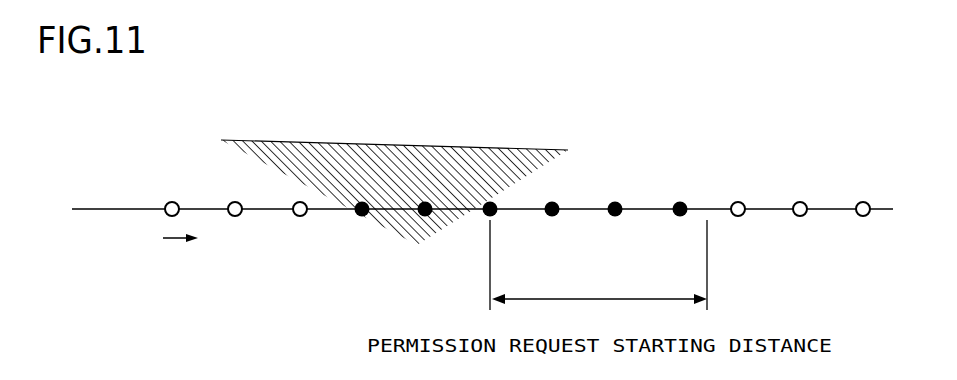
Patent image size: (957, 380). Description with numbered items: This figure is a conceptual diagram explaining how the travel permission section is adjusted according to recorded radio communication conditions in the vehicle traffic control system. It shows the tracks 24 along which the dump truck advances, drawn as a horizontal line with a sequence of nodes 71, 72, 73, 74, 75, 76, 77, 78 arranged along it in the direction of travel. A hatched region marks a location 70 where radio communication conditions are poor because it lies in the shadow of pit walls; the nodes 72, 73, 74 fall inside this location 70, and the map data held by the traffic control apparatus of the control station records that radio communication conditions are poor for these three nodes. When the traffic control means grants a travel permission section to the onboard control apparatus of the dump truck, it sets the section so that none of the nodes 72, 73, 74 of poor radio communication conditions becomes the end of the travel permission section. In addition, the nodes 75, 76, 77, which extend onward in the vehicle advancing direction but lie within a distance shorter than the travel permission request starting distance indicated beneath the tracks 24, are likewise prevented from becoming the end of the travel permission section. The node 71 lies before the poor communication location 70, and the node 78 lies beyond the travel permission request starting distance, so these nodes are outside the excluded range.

The tracks 24 is at (768, 204).
The location of poor radio communication conditions 70 is at (240, 152).
The node 71 is at (300, 217).
The node 72 is at (362, 203).
The node 73 is at (425, 203).
The node 74 is at (490, 203).
The node 75 is at (552, 216).
The node 76 is at (615, 216).
The node 77 is at (680, 216).
The node 78 is at (738, 216).